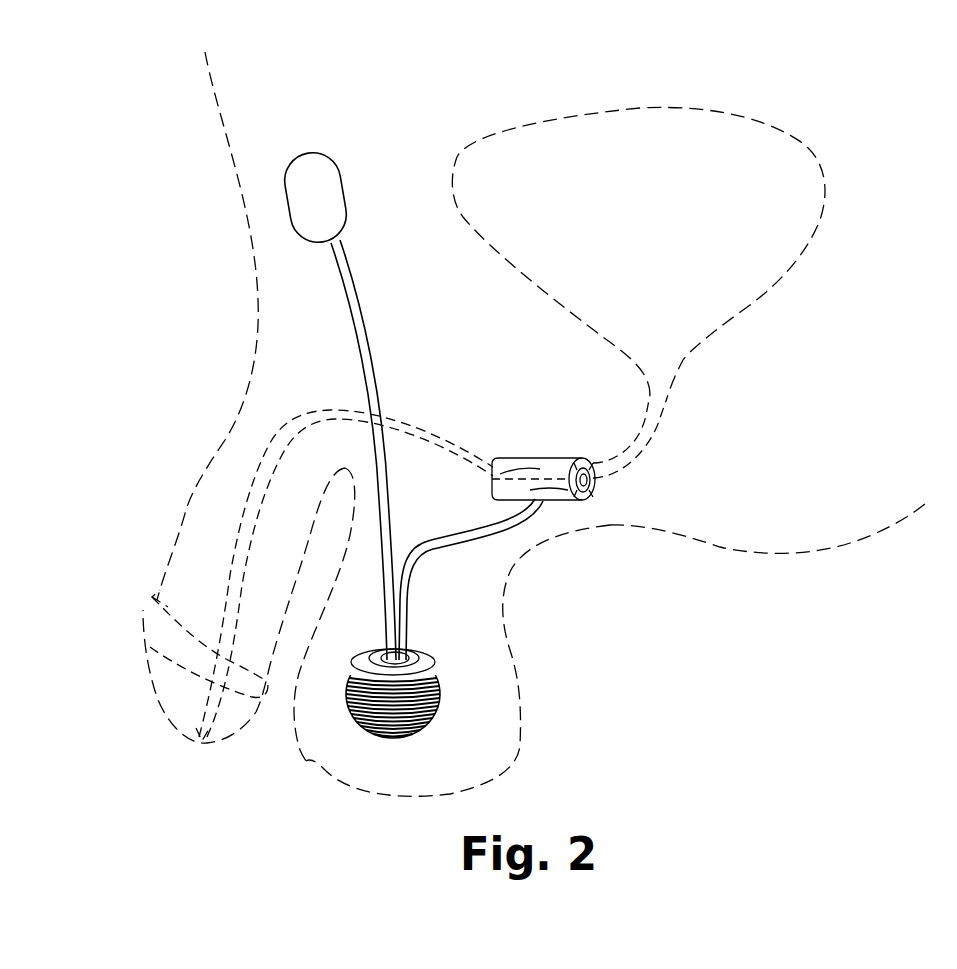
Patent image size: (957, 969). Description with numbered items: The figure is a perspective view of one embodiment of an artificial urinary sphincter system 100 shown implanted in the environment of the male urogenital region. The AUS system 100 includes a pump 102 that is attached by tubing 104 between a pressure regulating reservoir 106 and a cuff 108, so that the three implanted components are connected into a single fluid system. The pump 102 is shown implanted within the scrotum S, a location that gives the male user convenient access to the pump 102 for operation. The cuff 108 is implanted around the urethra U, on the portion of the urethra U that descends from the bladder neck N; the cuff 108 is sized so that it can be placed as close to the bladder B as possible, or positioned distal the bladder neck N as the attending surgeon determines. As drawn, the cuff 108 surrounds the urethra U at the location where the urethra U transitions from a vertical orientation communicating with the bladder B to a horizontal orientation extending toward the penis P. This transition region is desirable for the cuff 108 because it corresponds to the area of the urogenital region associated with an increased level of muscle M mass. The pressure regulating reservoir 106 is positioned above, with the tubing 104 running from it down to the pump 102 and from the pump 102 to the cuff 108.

The artificial urinary sphincter (AUS) system 100 is at (428, 360).
The pump 102 is at (415, 737).
The tubing 104 is at (413, 572).
The pressure regulating reservoir 106 is at (350, 198).
The cuff 108 is at (552, 458).
The urethra U is at (271, 436).
The penis P is at (191, 507).
The bladder B is at (806, 236).
The bladder neck N is at (662, 408).
The muscle M is at (620, 503).
The scrotum S is at (507, 666).